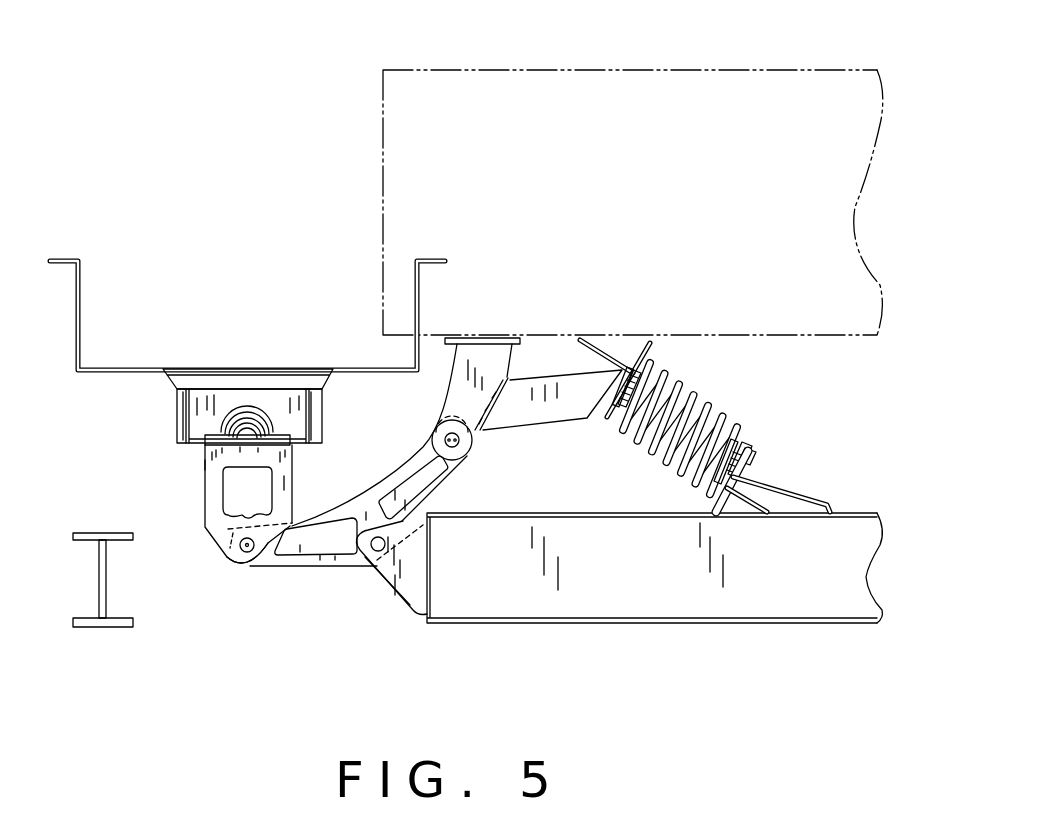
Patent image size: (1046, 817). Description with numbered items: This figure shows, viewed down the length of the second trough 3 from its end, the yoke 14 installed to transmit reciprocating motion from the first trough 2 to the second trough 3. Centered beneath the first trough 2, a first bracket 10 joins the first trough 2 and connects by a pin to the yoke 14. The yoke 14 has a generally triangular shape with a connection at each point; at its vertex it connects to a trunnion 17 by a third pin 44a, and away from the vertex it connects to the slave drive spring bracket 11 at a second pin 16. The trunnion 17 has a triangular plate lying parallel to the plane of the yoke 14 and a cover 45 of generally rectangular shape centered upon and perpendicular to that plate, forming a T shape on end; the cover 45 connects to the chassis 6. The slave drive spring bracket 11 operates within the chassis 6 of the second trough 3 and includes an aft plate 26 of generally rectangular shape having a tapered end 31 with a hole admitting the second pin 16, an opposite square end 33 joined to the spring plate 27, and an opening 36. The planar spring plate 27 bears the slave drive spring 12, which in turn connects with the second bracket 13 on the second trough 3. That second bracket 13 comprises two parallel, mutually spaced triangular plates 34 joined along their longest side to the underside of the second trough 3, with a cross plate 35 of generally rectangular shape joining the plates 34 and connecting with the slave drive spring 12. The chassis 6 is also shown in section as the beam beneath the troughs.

The first trough 2 is at (583, 70).
The second trough 3 is at (67, 261).
The chassis 6 is at (98, 588).
The first bracket 10 is at (538, 379).
The slave drive spring bracket 11 is at (190, 506).
The slave drive spring 12 is at (232, 437).
The second bracket 13 is at (160, 404).
The yoke 14 is at (305, 567).
The second pin 16 is at (240, 505).
The trunnion 17 is at (413, 548).
The aft plate 26 is at (215, 465).
The spring plate 27 is at (320, 442).
The tapered end 31 is at (245, 567).
The square end 33 is at (325, 484).
The triangular plates 34 is at (183, 420).
The cross plate 35 is at (215, 403).
The opening 36 is at (238, 548).
The third pin 44a is at (383, 550).
The cover 45 is at (428, 592).